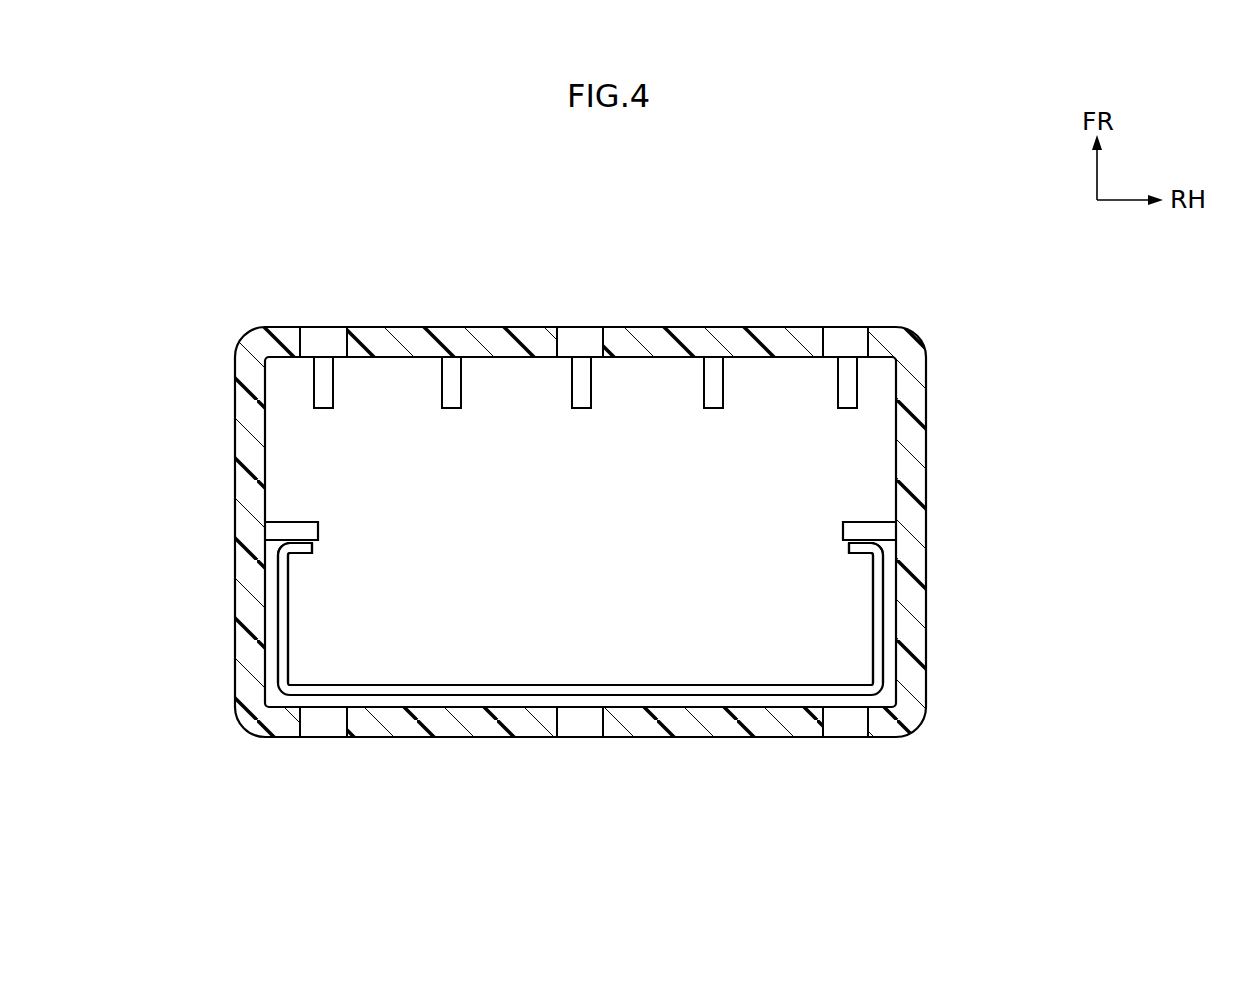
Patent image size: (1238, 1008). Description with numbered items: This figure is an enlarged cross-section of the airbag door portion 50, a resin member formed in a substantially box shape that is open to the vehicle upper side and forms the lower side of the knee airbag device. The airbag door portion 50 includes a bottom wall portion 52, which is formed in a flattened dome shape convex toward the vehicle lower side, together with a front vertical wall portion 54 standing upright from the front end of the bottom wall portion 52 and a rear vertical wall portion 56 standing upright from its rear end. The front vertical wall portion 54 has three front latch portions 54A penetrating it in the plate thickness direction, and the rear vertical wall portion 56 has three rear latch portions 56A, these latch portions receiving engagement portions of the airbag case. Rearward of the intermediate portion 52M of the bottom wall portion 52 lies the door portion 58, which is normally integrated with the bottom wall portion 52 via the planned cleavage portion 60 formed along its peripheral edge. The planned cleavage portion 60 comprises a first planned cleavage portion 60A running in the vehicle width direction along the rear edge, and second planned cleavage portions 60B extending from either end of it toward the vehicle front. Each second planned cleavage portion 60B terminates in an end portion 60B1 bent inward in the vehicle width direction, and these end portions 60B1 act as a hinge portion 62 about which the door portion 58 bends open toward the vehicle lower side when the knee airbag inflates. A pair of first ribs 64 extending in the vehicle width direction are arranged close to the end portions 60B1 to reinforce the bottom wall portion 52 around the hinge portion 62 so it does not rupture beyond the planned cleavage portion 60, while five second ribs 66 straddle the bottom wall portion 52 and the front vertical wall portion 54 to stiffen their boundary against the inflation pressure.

The airbag door portion 50 is at (968, 345).
The bottom wall portion 52 is at (873, 446).
The intermediate portion 52M is at (612, 528).
The front vertical wall portion 54 is at (497, 322).
The front latch portion 54A is at (343, 327).
The rear vertical wall portion 56 is at (472, 744).
The rear latch portion 56A is at (304, 737).
The door portion 58 is at (828, 590).
The planned cleavage portion 60 is at (502, 678).
The first planned cleavage portion 60A is at (643, 686).
The second planned cleavage portion 60B is at (292, 574).
The end portion 60B1 is at (288, 547).
The hinge portion 62 is at (602, 480).
The first rib 64 is at (290, 521).
The second rib 66 is at (333, 395).